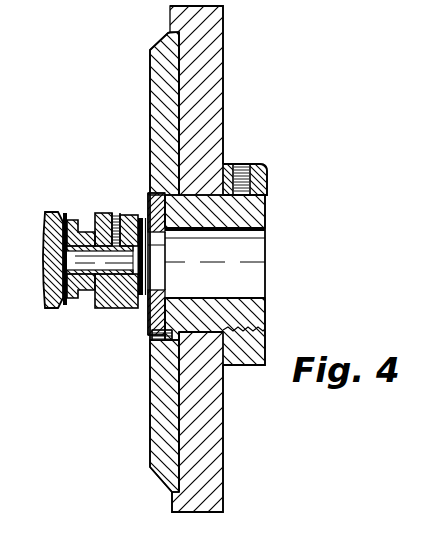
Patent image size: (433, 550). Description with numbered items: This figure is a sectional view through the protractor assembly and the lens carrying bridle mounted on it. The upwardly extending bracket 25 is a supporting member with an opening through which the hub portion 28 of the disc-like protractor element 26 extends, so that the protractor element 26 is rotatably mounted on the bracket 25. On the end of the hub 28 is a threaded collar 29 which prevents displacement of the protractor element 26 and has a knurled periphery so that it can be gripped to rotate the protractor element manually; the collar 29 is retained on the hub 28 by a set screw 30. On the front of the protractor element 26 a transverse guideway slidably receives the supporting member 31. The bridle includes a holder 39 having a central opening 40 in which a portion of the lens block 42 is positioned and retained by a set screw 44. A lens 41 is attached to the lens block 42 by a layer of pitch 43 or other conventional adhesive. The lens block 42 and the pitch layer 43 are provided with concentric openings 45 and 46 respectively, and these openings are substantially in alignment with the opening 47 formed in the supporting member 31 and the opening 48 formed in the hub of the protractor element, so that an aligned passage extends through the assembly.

The second upwardly extending bracket 25 is at (213, 83).
The protractor element 26 is at (150, 100).
The hub portion 28 is at (260, 213).
The collar 29 is at (267, 178).
The set screw 30 is at (248, 165).
The supporting member 31 is at (148, 220).
The holder 39 is at (98, 217).
The central opening 40 is at (133, 268).
The lens 41 is at (51, 212).
The lens block 42 is at (80, 290).
The layer of pitch 43 is at (63, 290).
The set screw 44 is at (112, 216).
The opening 45 is at (110, 294).
The opening 46 is at (58, 270).
The opening 47 is at (160, 248).
The opening 48 is at (262, 269).